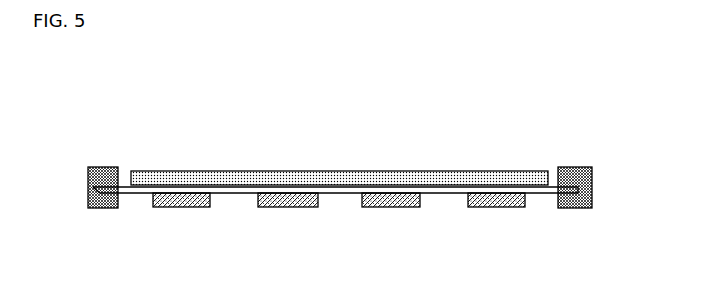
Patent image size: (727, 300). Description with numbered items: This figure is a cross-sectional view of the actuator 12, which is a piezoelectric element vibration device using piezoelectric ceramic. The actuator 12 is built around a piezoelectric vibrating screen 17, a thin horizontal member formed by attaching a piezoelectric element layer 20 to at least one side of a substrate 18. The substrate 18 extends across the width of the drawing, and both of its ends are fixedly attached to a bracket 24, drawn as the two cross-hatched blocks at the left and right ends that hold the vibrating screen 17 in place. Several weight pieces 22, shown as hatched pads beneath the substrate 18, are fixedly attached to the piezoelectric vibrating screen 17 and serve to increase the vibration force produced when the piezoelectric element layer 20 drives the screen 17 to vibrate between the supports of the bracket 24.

The actuator 12 is at (351, 97).
The piezoelectric vibrating screen 17 is at (335, 241).
The substrate 18 is at (362, 190).
The piezoelectric element layer 20 is at (390, 194).
The weight pieces 22 is at (282, 208).
The bracket 24 is at (88, 186).